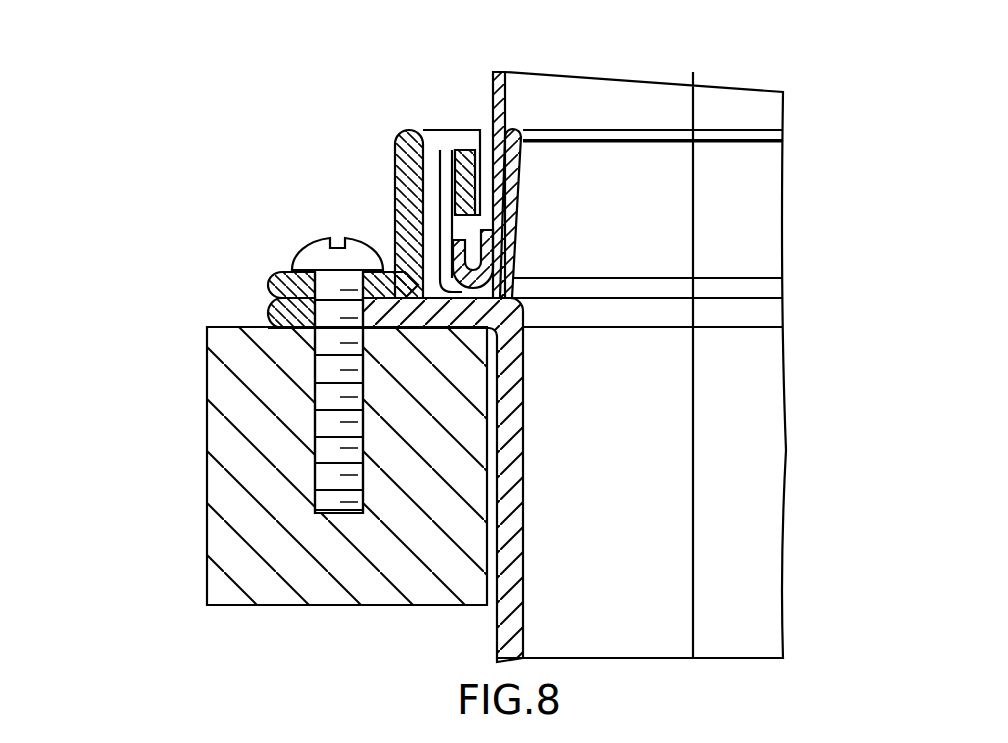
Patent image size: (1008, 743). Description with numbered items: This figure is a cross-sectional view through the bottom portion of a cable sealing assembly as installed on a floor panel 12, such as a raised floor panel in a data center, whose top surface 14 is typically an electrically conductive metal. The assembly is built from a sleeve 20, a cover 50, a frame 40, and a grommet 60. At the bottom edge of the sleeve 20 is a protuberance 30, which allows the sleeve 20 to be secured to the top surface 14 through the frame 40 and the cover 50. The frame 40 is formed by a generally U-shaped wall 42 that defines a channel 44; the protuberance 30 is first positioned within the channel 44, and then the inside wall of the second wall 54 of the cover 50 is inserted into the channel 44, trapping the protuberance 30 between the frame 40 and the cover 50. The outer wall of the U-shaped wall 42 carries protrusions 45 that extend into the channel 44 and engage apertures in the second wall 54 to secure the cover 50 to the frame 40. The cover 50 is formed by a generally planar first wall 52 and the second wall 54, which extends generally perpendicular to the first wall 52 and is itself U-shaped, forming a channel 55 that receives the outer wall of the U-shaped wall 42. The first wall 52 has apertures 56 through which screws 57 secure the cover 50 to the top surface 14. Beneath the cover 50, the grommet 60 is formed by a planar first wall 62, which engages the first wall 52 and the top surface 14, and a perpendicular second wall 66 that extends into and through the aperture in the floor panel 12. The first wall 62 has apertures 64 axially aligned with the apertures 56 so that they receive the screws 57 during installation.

The floor panel 12 is at (207, 478).
The top surface 14 is at (222, 328).
The sleeve 20 is at (492, 78).
The protuberance 30 is at (523, 250).
The frame 40 is at (568, 166).
The wall 42 is at (510, 223).
The channel 44 is at (523, 175).
The protrusions 45 is at (482, 215).
The cover 50 is at (298, 301).
The first wall 52 is at (268, 292).
The second wall 54 is at (387, 228).
The channel 55 is at (435, 165).
The apertures 56 is at (268, 283).
The screws 57 is at (287, 273).
The grommet 60 is at (524, 480).
The first wall 62 is at (268, 303).
The apertures 64 is at (297, 333).
The second wall 66 is at (515, 537).